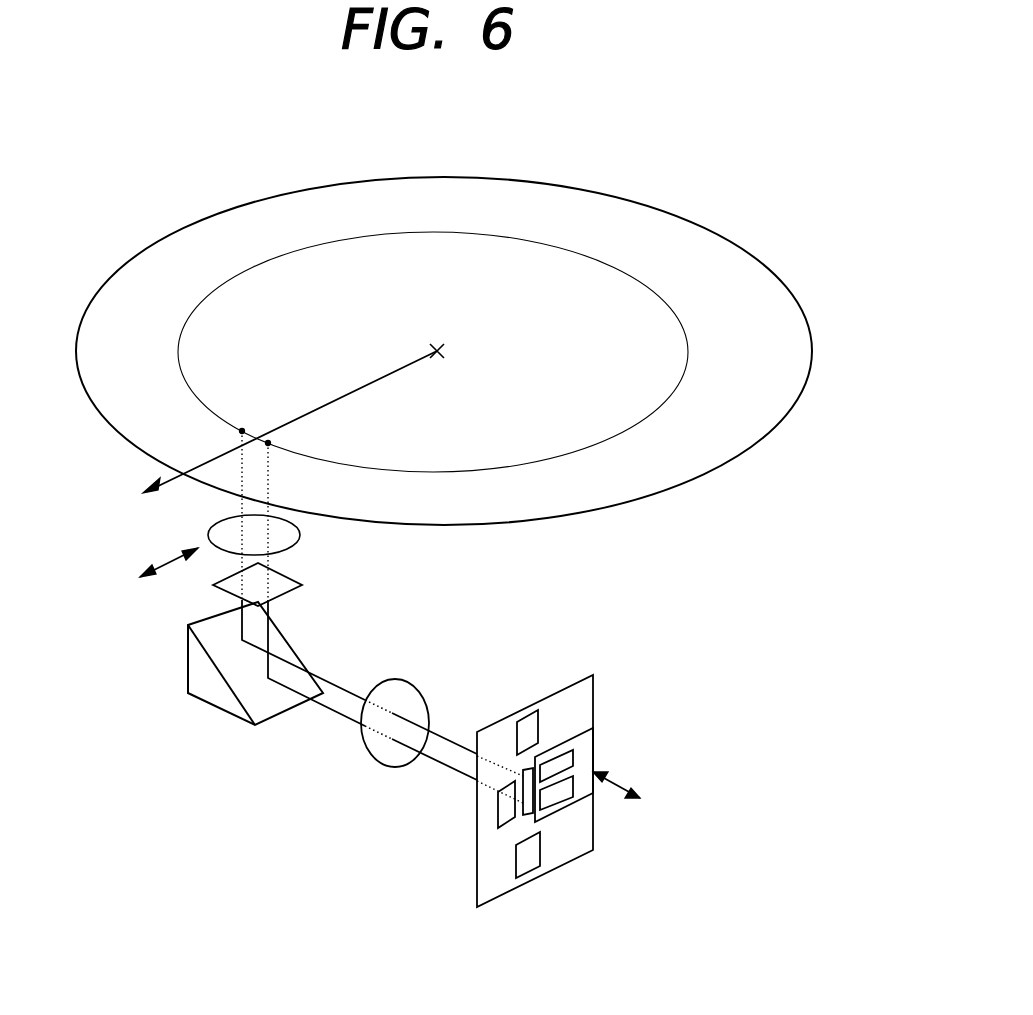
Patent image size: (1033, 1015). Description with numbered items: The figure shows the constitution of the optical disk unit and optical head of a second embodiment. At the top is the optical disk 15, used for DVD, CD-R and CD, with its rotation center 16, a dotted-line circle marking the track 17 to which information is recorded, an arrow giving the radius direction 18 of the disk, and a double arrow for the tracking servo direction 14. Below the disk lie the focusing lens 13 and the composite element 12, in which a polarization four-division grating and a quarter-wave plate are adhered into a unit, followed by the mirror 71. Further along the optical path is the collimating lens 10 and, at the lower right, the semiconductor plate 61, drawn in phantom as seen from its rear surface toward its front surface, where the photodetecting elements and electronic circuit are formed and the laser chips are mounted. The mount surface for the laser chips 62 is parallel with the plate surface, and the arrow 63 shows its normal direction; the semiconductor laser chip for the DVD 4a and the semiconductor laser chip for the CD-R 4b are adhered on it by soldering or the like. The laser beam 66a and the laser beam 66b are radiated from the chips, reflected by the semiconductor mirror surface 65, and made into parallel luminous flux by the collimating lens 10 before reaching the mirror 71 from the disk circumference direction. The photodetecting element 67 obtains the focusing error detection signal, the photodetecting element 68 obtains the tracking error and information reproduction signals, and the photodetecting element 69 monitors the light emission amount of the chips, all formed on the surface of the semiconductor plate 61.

The optical disk 15 is at (272, 196).
The track 17 is at (385, 233).
The rotation center of the optical disk 16 is at (437, 351).
The radius direction of the optical disk 18 is at (150, 488).
The tracking servo direction 14 is at (142, 578).
The focusing lens 13 is at (299, 539).
The composite element 12 is at (301, 586).
The mirror 71 is at (230, 687).
The laser beam for the DVD 66a is at (457, 744).
The laser beam for the CD-R 66b is at (453, 745).
The collimating lens 10 is at (367, 753).
The semiconductor plate 61 is at (593, 675).
The photodetecting element 67 is at (532, 710).
The photodetecting element 68 is at (537, 874).
The photodetecting element 69 is at (497, 823).
The semiconductor mirror surface 65 is at (536, 819).
The mount surface for the laser chips 62 is at (593, 728).
The semiconductor laser chip for the DVD 4a is at (592, 737).
The semiconductor laser chip for the CD-R 4b is at (590, 800).
The normal direction 63 is at (618, 784).